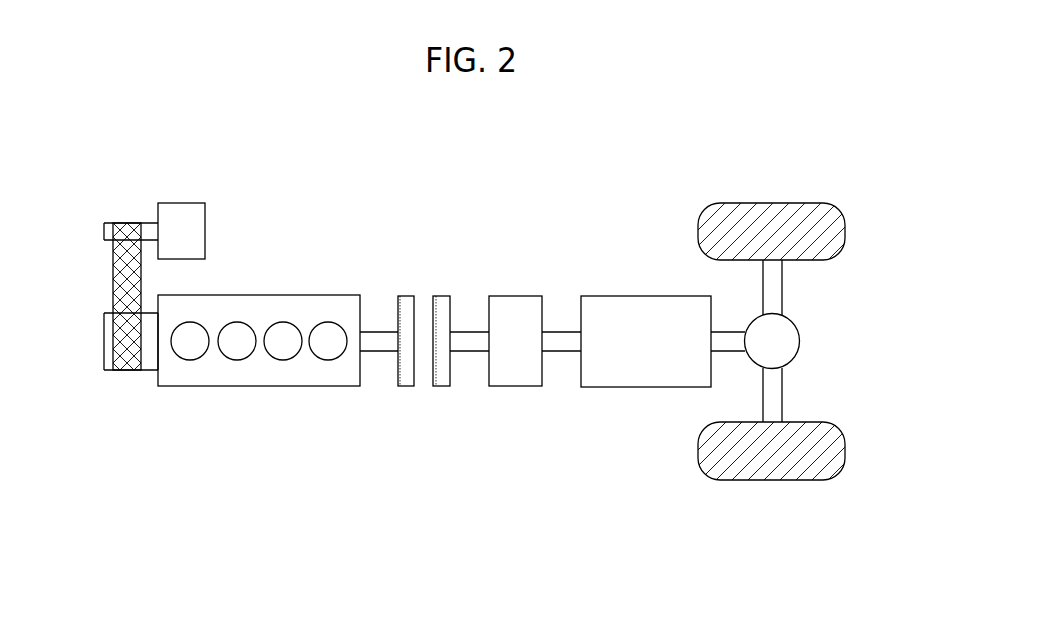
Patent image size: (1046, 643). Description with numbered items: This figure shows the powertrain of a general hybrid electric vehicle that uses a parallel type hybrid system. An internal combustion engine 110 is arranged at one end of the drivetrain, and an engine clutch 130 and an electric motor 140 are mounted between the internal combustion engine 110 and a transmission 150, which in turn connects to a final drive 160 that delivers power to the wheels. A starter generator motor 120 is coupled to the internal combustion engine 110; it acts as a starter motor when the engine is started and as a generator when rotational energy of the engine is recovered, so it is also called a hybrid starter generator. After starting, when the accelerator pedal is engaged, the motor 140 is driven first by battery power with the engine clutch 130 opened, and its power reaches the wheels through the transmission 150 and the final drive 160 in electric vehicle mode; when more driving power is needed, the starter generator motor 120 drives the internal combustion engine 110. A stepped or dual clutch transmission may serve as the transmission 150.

The internal combustion engine 110 is at (322, 294).
The starter generator motor 120 is at (207, 215).
The engine clutch 130 is at (447, 295).
The electric motor 140 is at (522, 295).
The transmission 150 is at (673, 293).
The final drive 160 is at (797, 323).